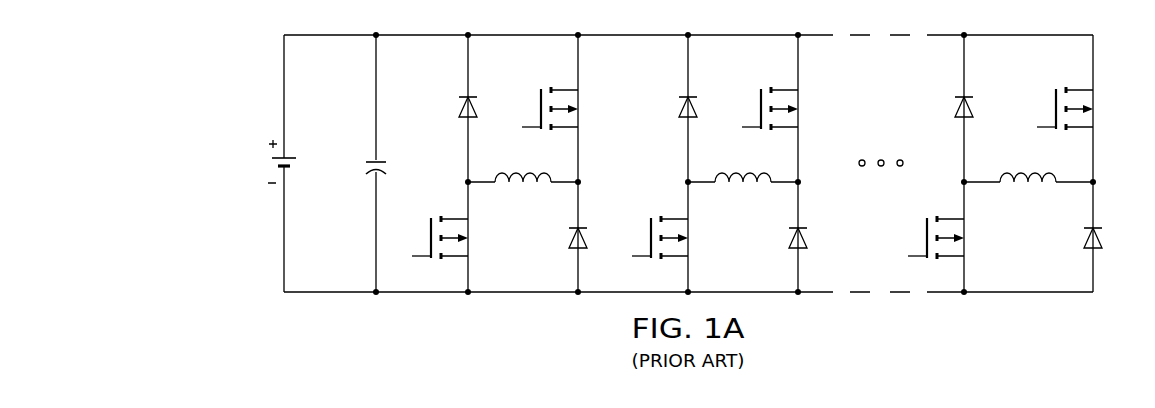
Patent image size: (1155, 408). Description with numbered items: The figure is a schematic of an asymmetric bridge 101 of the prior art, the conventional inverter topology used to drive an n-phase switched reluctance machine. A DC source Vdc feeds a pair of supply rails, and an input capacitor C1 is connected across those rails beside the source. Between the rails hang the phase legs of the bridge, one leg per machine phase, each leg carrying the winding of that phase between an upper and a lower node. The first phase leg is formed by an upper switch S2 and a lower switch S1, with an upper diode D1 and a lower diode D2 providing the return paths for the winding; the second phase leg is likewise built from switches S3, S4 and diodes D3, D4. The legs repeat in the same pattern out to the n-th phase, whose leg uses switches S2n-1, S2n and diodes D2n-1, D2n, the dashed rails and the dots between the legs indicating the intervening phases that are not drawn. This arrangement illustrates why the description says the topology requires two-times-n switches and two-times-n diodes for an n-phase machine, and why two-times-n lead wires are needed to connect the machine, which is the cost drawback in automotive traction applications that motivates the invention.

The asymmetric bridge 101 is at (244, 80).
The DC voltage source Vdc is at (298, 163).
The input capacitor C1 is at (389, 163).
The diode of phase a D1 is at (482, 111).
The diode of phase a D2 is at (592, 242).
The diode of phase b D3 is at (702, 111).
The diode of phase b D4 is at (812, 242).
The diode of phase n D2n-1 is at (989, 111).
The diode of phase n D2n is at (1111, 242).
The switch of phase a S1 is at (454, 237).
The switch of phase a S2 is at (565, 108).
The switch of phase b S3 is at (674, 237).
The switch of phase b S4 is at (785, 108).
The switch of phase n S2n-1 is at (962, 237).
The switch of phase n S2n is at (1084, 108).